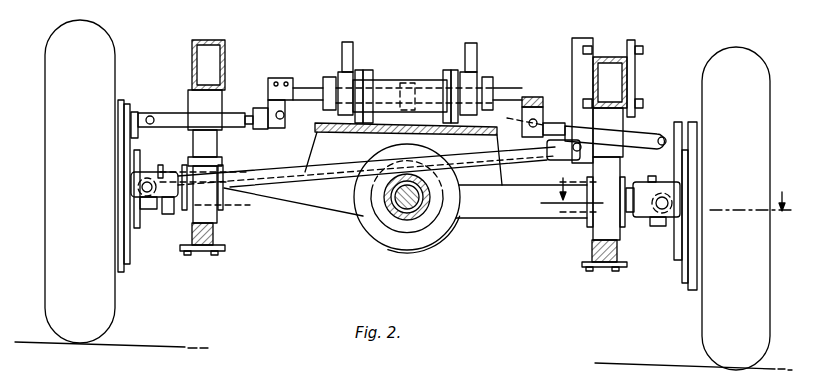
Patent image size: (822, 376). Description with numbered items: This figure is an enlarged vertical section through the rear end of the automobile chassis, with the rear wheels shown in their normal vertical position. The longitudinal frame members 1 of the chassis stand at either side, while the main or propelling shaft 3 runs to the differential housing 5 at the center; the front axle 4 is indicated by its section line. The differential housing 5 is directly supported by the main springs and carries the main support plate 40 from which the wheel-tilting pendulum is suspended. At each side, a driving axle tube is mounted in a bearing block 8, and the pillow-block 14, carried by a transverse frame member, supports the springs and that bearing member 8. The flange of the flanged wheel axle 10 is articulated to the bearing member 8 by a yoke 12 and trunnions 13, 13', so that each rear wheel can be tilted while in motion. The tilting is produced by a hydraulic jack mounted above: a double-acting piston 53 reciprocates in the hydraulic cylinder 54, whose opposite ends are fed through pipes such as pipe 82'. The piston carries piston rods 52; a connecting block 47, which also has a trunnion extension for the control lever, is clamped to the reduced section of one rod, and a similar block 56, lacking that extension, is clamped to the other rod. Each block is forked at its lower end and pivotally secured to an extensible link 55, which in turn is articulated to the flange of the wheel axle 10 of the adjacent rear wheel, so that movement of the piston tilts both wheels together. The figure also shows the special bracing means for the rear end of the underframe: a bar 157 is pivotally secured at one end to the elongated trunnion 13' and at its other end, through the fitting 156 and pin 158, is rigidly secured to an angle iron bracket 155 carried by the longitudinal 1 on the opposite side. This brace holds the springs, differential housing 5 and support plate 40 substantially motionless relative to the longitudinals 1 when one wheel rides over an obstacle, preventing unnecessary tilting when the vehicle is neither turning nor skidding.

The longitudinal frame member 1 is at (204, 39).
The main or propelling shaft 3 is at (398, 206).
The front axle 4 is at (660, 192).
The differential housing 5 is at (447, 232).
The bearing block 8 is at (175, 205).
The flanged wheel axle 10 is at (128, 232).
The yoke 12 is at (142, 214).
The trunnion 13 is at (656, 186).
The elongated trunnion 13' is at (180, 164).
The pillow-block 14 is at (240, 179).
The main support plate 40 is at (360, 131).
The connecting block 47 is at (533, 96).
The piston rod 52 is at (311, 88).
The double-acting piston 53 is at (408, 83).
The hydraulic cylinder 54 is at (428, 80).
The extensible link 55 is at (183, 117).
The connecting block 56 is at (281, 78).
The pipe 82' is at (416, 40).
The angle iron bracket 155 is at (583, 72).
The clevis 156 is at (575, 152).
The bar 157 is at (327, 172).
The pin 158 is at (166, 178).